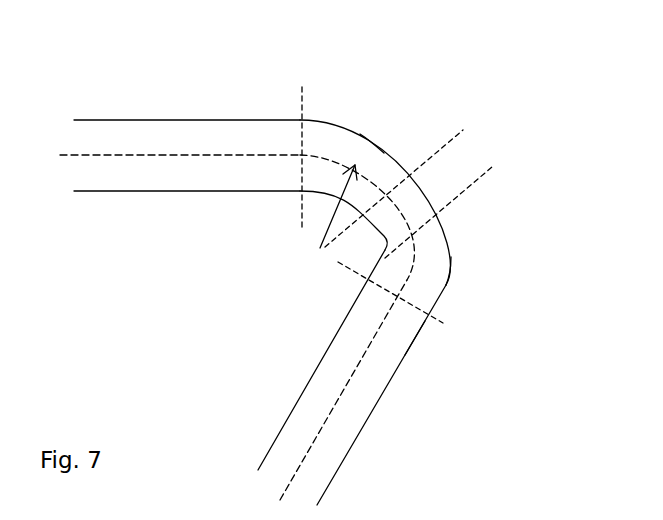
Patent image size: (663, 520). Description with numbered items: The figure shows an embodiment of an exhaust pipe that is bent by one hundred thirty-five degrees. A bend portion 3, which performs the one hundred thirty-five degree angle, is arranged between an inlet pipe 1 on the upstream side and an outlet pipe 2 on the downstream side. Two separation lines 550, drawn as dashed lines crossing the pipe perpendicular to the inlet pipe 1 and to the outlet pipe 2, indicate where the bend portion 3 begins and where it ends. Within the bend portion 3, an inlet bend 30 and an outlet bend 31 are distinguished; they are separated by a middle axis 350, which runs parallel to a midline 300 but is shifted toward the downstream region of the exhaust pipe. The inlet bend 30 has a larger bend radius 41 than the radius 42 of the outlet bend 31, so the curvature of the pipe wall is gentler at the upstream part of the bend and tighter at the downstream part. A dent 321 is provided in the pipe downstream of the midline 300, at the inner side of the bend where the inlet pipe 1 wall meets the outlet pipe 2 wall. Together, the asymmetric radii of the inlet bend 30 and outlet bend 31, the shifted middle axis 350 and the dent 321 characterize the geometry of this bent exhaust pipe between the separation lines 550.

The inlet pipe 1 is at (130, 125).
The outlet pipe 2 is at (300, 424).
The bend portion 3 is at (547, 132).
The inlet bend 30 is at (372, 150).
The outlet bend 31 is at (443, 258).
The bend radius 41 is at (378, 160).
The radius 42 is at (415, 340).
The midline 300 is at (451, 142).
The dent 321 is at (420, 253).
The middle axis 350 is at (480, 178).
The separation lines 550 is at (304, 102).